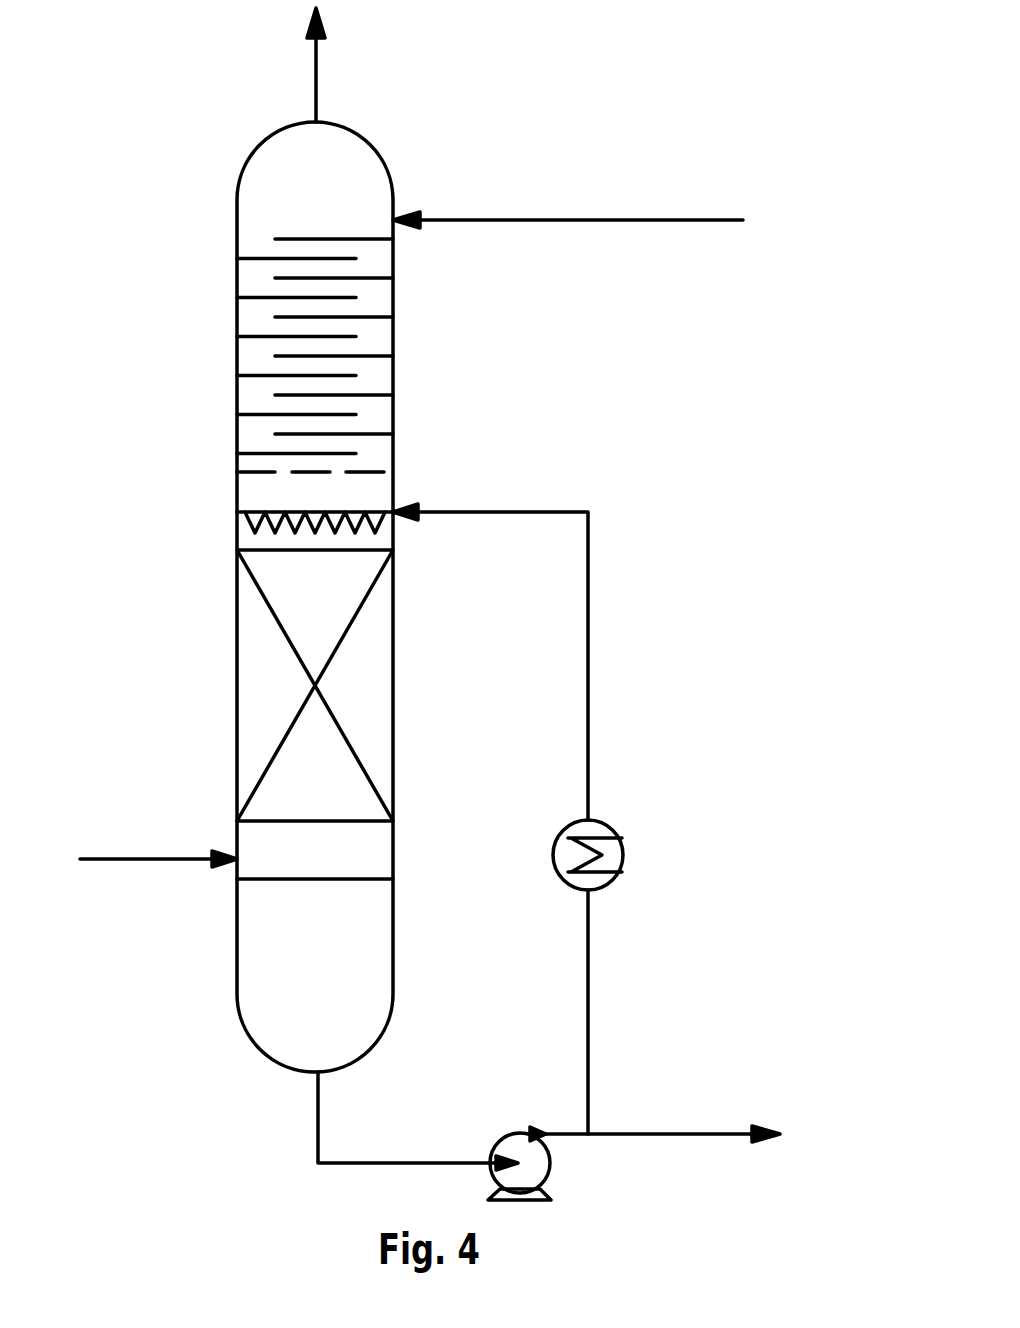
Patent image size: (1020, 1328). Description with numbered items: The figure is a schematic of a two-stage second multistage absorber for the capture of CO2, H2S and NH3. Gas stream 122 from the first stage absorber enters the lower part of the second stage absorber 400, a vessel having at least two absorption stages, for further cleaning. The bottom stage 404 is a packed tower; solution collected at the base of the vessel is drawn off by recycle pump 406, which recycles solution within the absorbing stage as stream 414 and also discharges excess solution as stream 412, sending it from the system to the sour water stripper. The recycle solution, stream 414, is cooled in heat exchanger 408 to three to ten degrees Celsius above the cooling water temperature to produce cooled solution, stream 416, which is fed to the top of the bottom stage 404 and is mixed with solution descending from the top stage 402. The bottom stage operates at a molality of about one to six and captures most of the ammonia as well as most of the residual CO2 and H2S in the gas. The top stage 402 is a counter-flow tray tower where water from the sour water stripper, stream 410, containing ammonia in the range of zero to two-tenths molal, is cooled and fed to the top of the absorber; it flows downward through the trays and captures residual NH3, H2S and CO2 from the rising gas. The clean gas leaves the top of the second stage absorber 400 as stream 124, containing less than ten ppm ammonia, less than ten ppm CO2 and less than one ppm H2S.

The second stage absorber 400 is at (258, 150).
The top stage 402 is at (237, 331).
The bottom stage 404 is at (237, 650).
The recycle pump 406 is at (549, 1170).
The heat exchanger 408 is at (622, 852).
The stream 410 is at (618, 220).
The stream 412 is at (742, 1134).
The stream 414 is at (588, 972).
The stream 416 is at (588, 664).
The stream 122 is at (120, 859).
The stream 124 is at (318, 62).